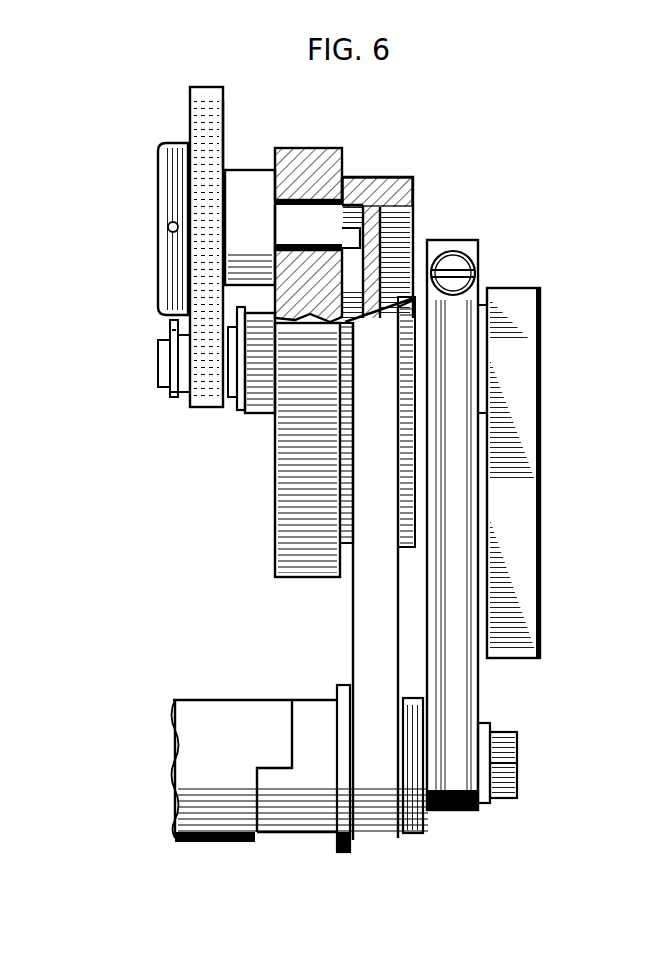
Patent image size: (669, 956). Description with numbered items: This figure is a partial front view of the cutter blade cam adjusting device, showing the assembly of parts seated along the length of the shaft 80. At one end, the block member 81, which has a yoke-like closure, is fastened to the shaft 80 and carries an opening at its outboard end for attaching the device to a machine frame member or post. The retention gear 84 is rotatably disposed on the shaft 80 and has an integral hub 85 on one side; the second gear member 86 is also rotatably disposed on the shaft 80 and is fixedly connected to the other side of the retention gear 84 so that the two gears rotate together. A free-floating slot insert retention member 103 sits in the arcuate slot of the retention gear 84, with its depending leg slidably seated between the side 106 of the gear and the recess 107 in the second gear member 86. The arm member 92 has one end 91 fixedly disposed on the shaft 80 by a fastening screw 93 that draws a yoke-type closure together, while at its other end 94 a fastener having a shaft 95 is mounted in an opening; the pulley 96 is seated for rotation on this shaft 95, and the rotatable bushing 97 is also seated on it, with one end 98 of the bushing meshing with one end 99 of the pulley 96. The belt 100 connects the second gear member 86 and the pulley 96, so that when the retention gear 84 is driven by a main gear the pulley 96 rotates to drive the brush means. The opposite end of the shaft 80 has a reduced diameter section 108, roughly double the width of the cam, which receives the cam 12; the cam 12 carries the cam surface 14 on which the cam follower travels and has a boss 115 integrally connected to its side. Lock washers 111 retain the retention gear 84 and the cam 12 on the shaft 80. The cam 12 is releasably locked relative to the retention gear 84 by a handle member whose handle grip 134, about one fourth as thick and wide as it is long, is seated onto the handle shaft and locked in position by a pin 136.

The cam 12 is at (225, 107).
The cam surface 14 is at (207, 86).
The shaft 80 is at (158, 350).
The block member 81 is at (540, 498).
The retention gear 84 is at (273, 500).
The hub 85 is at (265, 413).
The second gear member 86 is at (403, 176).
The end of arm member 91 is at (457, 238).
The arm member 92 is at (453, 460).
The fastening screw 93 is at (477, 265).
The end of arm member 94 is at (457, 812).
The fastener shaft 95 is at (512, 752).
The pulley 96 is at (340, 686).
The rotatable bushing 97 is at (178, 700).
The end of bushing 98 is at (290, 708).
The end of pulley 99 is at (242, 838).
The belt 100 is at (320, 148).
The slot insert retention member 103 is at (345, 175).
The side of gear 106 is at (375, 176).
The recess 107 is at (413, 224).
The reduced diameter section 108 is at (183, 397).
The lock washers 111 is at (172, 398).
The boss 115 is at (247, 170).
The handle grip 134 is at (158, 190).
The pin 136 is at (168, 230).